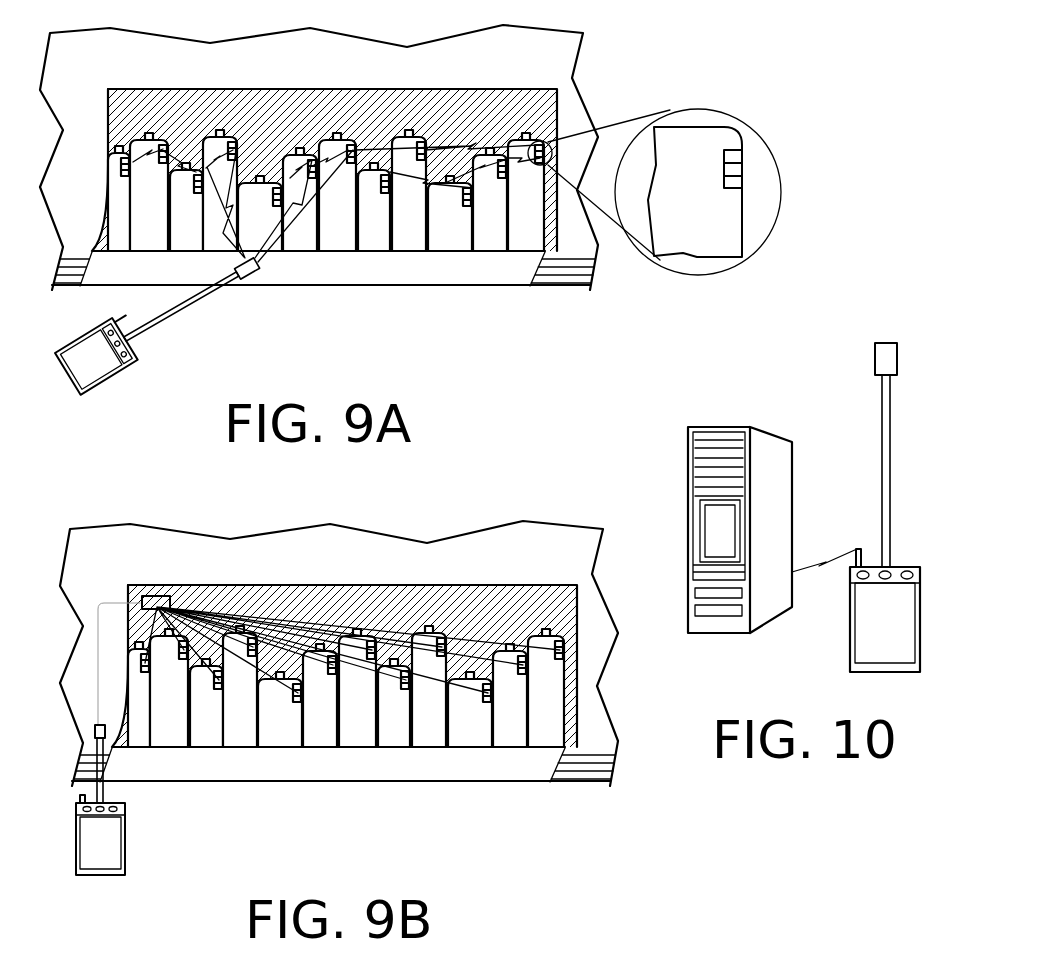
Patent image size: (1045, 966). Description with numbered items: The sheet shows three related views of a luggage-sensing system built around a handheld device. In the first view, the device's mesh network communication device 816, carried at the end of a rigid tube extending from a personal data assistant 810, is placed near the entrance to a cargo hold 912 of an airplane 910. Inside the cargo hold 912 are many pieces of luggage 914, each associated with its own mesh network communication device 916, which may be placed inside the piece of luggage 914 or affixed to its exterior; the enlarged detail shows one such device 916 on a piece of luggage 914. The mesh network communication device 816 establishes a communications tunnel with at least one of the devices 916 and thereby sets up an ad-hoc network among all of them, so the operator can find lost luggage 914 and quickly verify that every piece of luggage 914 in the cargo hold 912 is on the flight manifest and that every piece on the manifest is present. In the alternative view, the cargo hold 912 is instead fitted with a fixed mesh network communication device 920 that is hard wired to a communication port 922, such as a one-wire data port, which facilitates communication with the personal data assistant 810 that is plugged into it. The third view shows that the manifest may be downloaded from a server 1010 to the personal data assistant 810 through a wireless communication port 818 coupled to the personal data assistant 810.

In FIG. 9A, the airplane 910 is at (514, 78).
In FIG. 9B, the airplane 910 is at (536, 563).
In FIG. 9A, the cargo hold 912 is at (246, 98).
In FIG. 9B, the cargo hold 912 is at (268, 585).
In FIG. 9A, the luggage 914 is at (112, 248).
In FIG. 9B, the luggage 914 is at (173, 749).
In FIG. 9A, the mesh network communication device 916 is at (742, 170).
In FIG. 9A, the mesh network communication device 816 is at (250, 280).
In FIG. 9A, the personal data assistant 810 is at (105, 328).
In FIG. 9B, the personal data assistant 810 is at (126, 815).
In FIG. 10, the personal data assistant 810 is at (850, 643).
In FIG. 9B, the fixed mesh network communication device 920 is at (153, 596).
In FIG. 9B, the communication port 922 is at (92, 730).
In FIG. 10, the server 1010 is at (728, 428).
In FIG. 10, the wireless communication port 818 is at (864, 548).